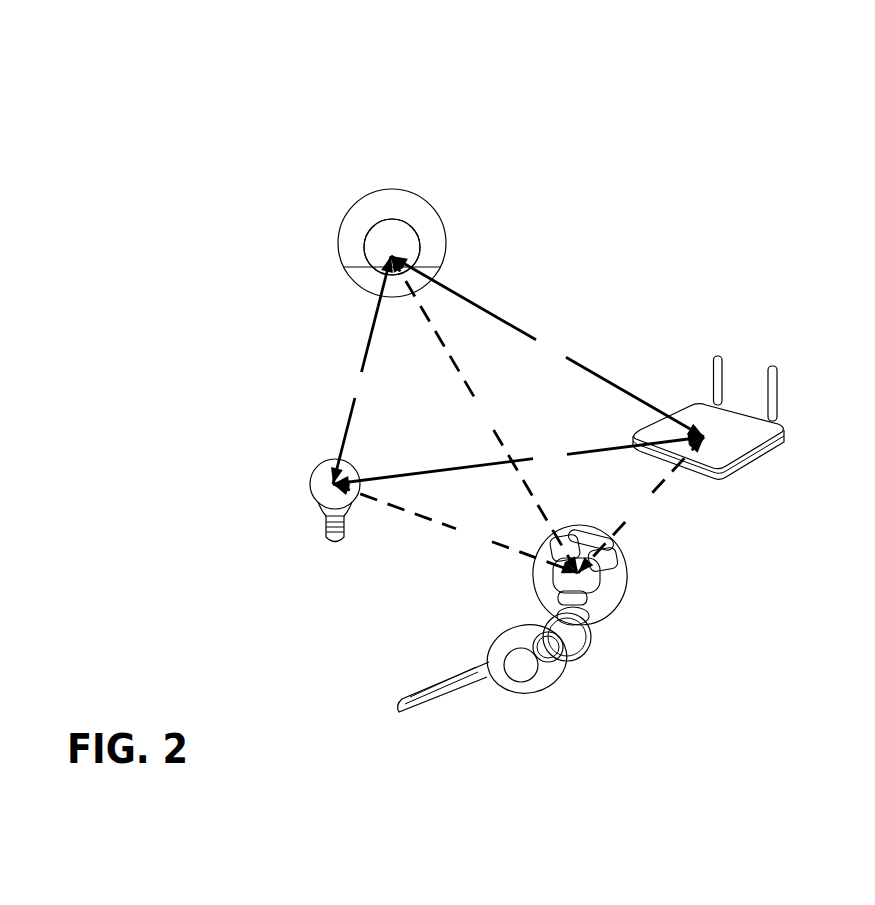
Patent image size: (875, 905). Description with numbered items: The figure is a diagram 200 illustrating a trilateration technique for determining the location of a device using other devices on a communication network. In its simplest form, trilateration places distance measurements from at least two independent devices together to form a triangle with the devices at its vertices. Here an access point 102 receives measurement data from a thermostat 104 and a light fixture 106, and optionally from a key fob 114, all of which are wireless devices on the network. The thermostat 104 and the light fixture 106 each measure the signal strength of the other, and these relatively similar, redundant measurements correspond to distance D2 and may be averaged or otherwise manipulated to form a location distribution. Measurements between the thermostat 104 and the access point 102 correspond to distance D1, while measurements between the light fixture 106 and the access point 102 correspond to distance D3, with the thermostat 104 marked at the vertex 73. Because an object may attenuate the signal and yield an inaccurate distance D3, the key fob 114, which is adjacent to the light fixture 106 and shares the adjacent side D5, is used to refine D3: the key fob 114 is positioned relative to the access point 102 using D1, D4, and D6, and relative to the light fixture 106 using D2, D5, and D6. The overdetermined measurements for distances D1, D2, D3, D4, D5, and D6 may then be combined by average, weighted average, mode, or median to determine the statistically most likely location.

The system environment 200 is at (140, 59).
The thermostat 104 is at (389, 190).
The speaker device reference point 73 is at (392, 247).
The access point 102 is at (784, 428).
The light fixture 106 is at (350, 462).
The key fob 114 is at (530, 584).
The distance D1 is at (547, 346).
The distance D2 is at (362, 370).
The distance D3 is at (518, 460).
The distance D4 is at (641, 505).
The distance D5 is at (455, 528).
The distance D6 is at (484, 414).